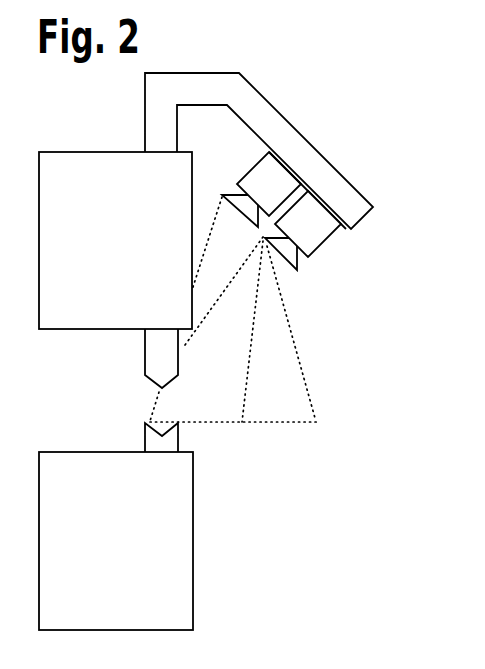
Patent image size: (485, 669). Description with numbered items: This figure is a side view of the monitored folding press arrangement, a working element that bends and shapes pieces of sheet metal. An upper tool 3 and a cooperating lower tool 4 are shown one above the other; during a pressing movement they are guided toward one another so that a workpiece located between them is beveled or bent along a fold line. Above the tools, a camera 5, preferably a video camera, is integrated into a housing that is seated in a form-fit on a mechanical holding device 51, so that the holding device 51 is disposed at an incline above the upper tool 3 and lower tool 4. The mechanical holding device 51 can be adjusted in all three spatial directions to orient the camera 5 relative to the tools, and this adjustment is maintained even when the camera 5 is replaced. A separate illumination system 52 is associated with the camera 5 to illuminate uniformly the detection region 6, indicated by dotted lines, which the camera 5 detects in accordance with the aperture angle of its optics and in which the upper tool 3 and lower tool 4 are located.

The upper tool 3 is at (153, 368).
The lower tool 4 is at (152, 444).
The camera 5 is at (277, 171).
The mechanical holding device 51 is at (322, 240).
The illumination system 52 is at (353, 191).
The detection region 6 is at (315, 418).